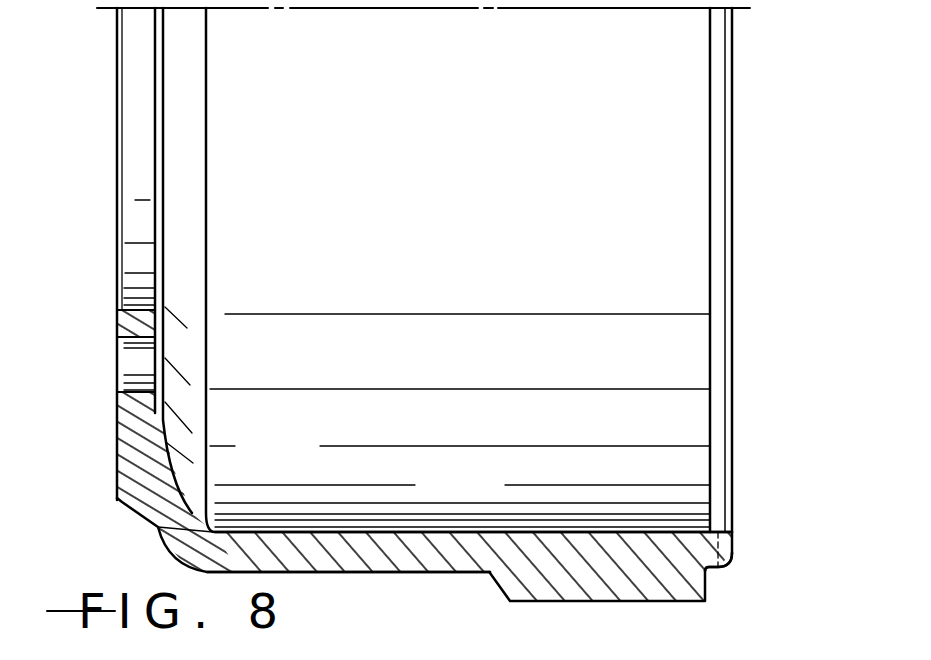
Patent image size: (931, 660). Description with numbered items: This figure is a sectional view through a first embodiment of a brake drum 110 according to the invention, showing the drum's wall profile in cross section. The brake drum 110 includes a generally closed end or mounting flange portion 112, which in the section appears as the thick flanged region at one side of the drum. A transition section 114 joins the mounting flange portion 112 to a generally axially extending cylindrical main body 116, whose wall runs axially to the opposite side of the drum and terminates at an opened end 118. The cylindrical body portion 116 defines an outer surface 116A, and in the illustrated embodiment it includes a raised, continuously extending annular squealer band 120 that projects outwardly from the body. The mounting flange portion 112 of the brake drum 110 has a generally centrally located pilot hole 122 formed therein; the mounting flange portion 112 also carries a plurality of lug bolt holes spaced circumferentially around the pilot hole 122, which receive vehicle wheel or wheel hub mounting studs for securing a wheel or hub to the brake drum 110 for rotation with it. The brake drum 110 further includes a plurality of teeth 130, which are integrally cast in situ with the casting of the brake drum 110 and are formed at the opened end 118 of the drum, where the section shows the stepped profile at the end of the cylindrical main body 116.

The brake drum 110 is at (88, 352).
The mounting flange portion 112 is at (120, 420).
The transition section 114 is at (190, 517).
The cylindrical main body 116 is at (413, 537).
The outer surface 116A is at (390, 578).
The opened end 118 is at (733, 342).
The squealer band 120 is at (548, 606).
The pilot hole 122 is at (118, 312).
The teeth 130 is at (740, 571).